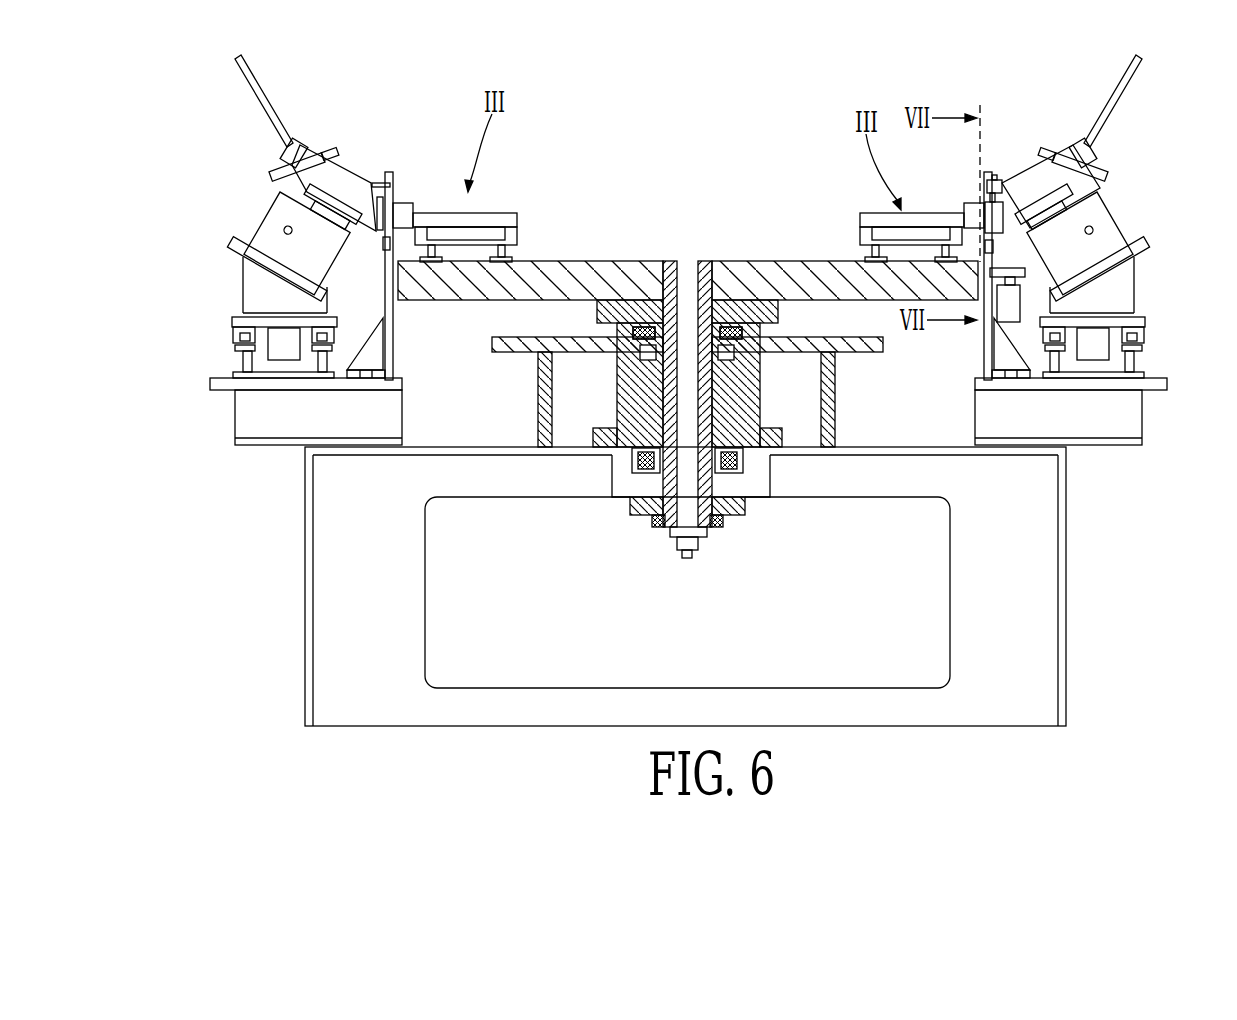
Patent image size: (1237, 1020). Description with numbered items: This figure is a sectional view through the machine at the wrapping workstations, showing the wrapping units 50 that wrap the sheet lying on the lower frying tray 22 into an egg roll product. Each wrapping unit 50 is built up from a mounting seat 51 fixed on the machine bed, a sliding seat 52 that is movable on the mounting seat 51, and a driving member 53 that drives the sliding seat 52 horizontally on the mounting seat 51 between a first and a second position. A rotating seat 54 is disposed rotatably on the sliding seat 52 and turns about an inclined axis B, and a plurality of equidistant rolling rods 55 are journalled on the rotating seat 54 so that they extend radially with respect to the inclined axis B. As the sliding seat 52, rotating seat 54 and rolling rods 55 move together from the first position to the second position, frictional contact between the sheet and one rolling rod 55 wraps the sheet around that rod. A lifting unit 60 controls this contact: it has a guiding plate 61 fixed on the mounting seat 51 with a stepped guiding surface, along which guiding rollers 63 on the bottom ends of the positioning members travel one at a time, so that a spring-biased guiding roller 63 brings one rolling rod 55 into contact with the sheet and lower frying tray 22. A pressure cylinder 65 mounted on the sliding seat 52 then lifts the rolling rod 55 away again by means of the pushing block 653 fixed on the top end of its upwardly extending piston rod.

The lower frying tray 22 is at (860, 228).
The wrapping unit 50 is at (320, 126).
The mounting seat 51 is at (1118, 378).
The sliding seat 52 is at (1120, 292).
The driving member 53 is at (1100, 350).
The rotating seat 54 is at (1033, 185).
The rolling rod 55 is at (1140, 68).
The lifting unit 60 is at (993, 160).
The guiding plate 61 is at (1070, 238).
The guiding roller 63 is at (1060, 232).
The pressure cylinder 65 is at (1010, 308).
The pushing block 653 is at (1055, 275).
The inclined axis B is at (1047, 233).